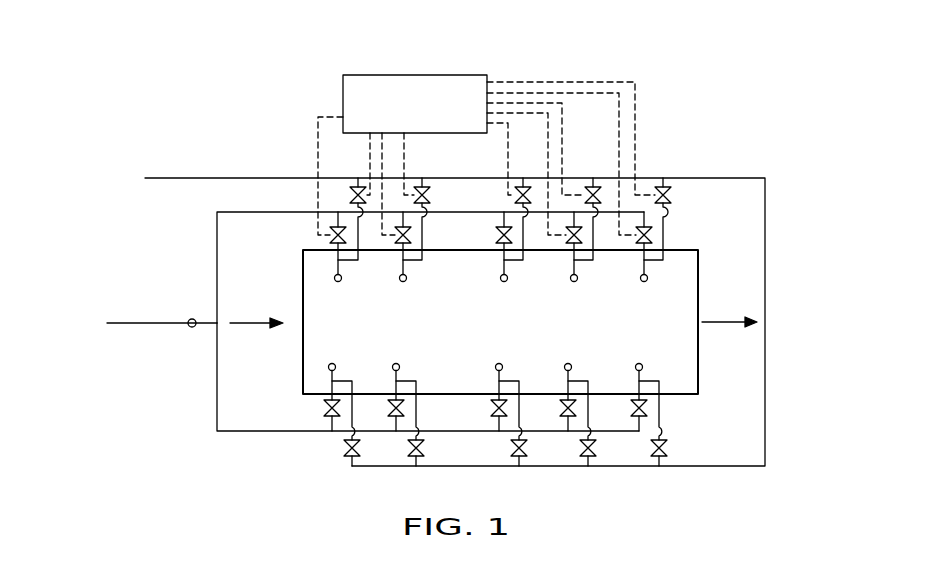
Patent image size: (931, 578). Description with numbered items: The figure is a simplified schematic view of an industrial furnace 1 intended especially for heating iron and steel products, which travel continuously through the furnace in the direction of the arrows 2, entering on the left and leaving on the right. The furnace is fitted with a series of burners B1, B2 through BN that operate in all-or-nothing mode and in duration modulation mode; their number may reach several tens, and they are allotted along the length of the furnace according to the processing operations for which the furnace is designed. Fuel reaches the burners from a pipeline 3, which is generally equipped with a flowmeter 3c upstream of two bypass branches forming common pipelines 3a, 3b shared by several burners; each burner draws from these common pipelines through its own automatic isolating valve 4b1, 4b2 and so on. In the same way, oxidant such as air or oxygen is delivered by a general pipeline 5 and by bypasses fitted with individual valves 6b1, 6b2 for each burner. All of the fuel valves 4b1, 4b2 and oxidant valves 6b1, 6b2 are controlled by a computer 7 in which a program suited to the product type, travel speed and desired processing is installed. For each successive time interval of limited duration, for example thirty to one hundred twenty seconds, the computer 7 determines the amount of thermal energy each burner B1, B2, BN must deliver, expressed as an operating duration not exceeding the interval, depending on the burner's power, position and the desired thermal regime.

The industrial furnace 1 is at (699, 377).
The arrows 2 is at (247, 322).
The pipeline 3 is at (162, 322).
The common pipeline 3a is at (225, 212).
The common pipeline 3b is at (260, 432).
The flowmeter 3c is at (192, 328).
The automatic isolating valve 4b1 is at (330, 236).
The automatic isolating valve 4b2 is at (394, 226).
The general pipeline 5 is at (193, 177).
The individual valve 6b1 is at (350, 189).
The individual valve 6b2 is at (432, 193).
The computer 7 is at (397, 87).
The burner B1 is at (342, 279).
The burner B2 is at (407, 279).
The burner BN is at (640, 363).